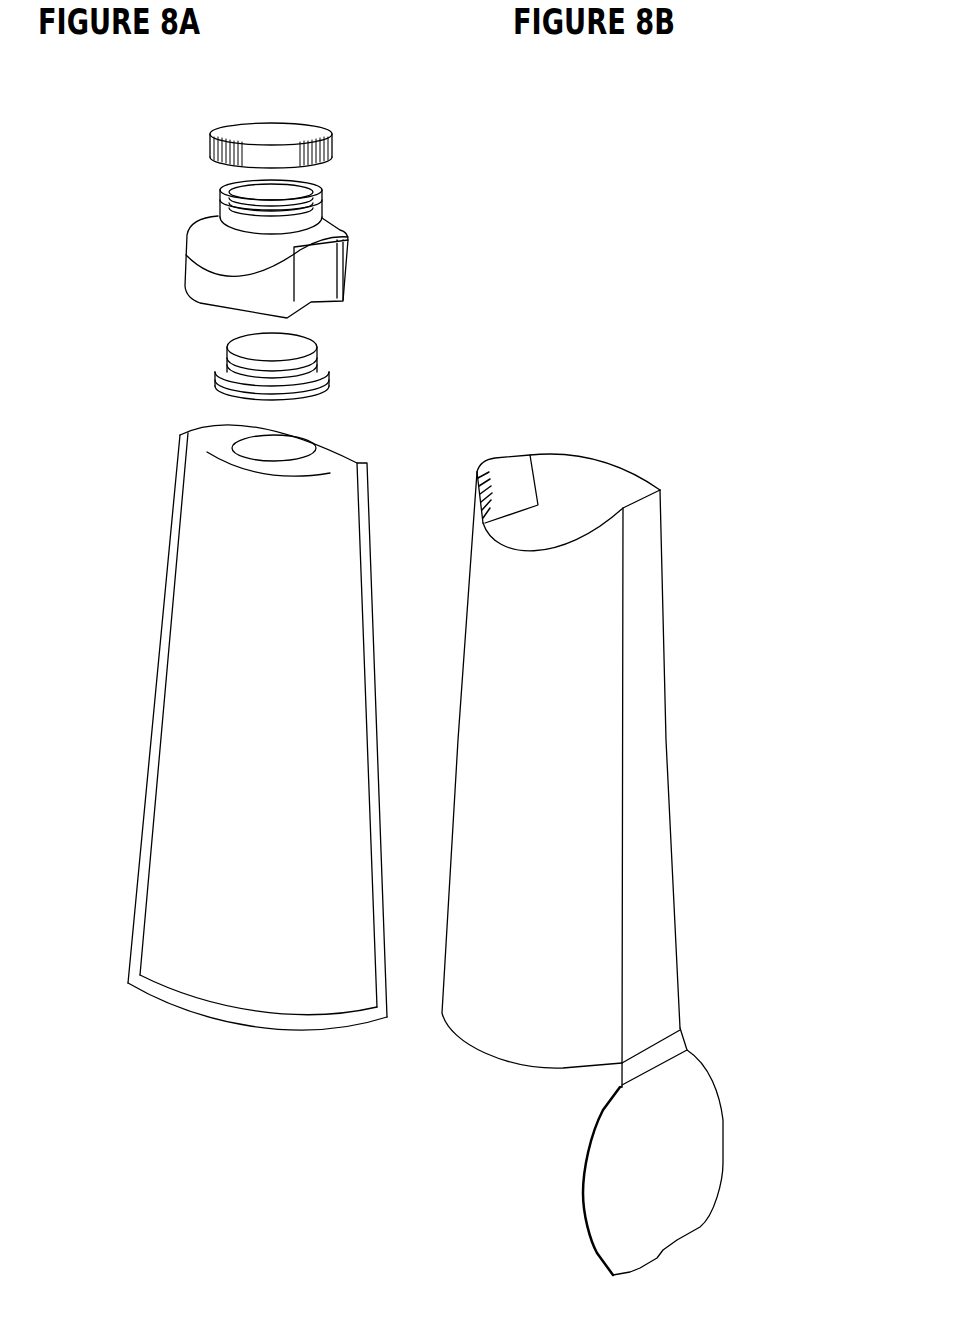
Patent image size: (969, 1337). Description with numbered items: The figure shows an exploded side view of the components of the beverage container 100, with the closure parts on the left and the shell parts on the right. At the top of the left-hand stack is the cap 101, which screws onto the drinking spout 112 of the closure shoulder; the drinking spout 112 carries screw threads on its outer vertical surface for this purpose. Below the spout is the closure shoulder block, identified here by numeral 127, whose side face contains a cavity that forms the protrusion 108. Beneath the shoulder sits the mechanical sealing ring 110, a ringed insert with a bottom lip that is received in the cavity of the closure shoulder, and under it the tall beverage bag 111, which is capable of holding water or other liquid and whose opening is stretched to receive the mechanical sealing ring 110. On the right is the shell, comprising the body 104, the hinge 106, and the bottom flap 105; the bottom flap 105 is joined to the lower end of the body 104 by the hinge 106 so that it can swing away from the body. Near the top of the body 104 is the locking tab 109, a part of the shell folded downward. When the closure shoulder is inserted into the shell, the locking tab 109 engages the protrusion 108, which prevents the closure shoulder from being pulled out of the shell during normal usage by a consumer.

In FIG. 8B, the beverage container 100 is at (487, 175).
In FIG. 8A, the cap 101 is at (197, 145).
In FIG. 8B, the body 104 is at (606, 753).
In FIG. 8B, the bottom flap 105 is at (625, 1145).
In FIG. 8B, the hinge 106 is at (648, 1058).
In FIG. 8A, the protrusion 108 is at (307, 293).
In FIG. 8B, the locking tab 109 is at (500, 496).
In FIG. 8A, the mechanical sealing ring 110 is at (320, 374).
In FIG. 8A, the beverage bag 111 is at (262, 552).
In FIG. 8A, the drinking spout 112 is at (333, 196).
In FIG. 8A, the neck block 127 is at (292, 267).